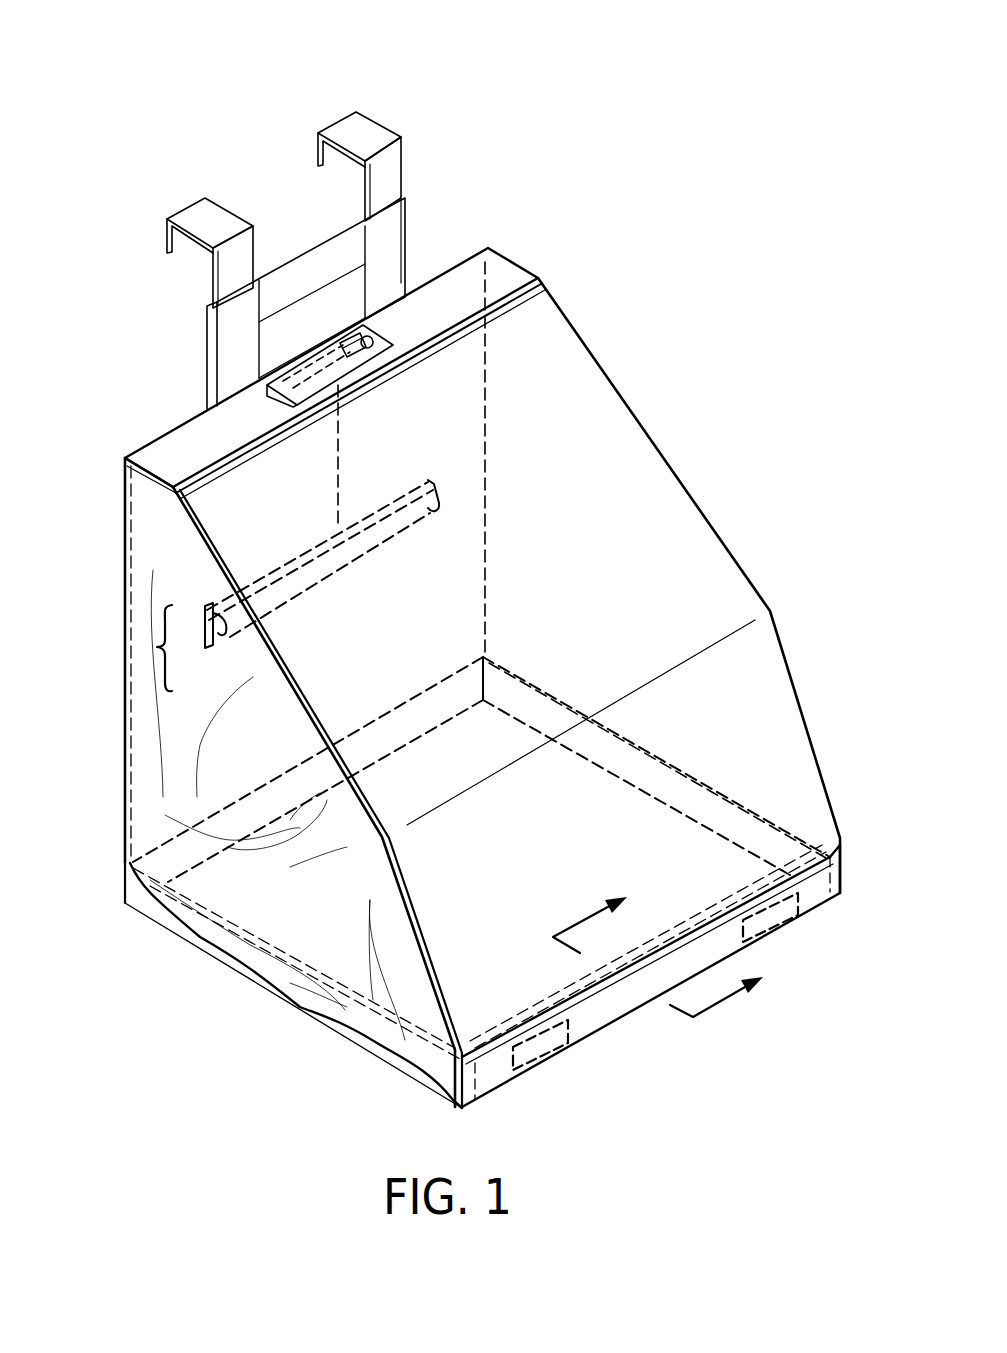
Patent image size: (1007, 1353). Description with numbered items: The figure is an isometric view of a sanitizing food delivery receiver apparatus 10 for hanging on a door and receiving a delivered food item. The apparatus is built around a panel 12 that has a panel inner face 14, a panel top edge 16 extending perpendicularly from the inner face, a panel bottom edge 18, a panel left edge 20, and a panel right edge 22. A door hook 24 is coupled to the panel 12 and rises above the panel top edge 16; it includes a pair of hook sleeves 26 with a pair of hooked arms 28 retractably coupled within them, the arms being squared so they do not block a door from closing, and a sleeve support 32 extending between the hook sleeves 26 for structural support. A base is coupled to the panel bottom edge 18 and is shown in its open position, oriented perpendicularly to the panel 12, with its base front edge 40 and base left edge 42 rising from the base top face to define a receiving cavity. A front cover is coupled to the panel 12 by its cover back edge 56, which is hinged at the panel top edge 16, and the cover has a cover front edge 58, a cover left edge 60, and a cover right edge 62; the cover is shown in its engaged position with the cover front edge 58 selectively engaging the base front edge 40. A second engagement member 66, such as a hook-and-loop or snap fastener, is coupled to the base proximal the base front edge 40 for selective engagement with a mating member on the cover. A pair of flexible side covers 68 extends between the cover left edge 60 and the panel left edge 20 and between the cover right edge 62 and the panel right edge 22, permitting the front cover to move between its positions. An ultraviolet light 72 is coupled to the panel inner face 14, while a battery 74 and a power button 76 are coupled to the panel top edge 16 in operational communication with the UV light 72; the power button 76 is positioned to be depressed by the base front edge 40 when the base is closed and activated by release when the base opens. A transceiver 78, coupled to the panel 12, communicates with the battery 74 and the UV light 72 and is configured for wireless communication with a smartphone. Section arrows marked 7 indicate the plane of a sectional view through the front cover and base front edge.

The sanitizing food delivery receiver apparatus 10 is at (722, 164).
The panel 12 is at (125, 768).
The panel inner face 14 is at (156, 647).
The panel top edge 16 is at (285, 412).
The panel bottom edge 18 is at (400, 700).
The panel left edge 20 is at (125, 828).
The panel right edge 22 is at (494, 496).
The door hook 24 is at (371, 280).
The hook sleeves 26 is at (307, 207).
The hooked arms 28 is at (353, 127).
The sleeve support 32 is at (313, 267).
The base front edge 40 is at (670, 1001).
The base left edge 42 is at (240, 967).
The cover back edge 56 is at (238, 452).
The cover front edge 58 is at (843, 890).
The cover left edge 60 is at (420, 953).
The cover right edge 62 is at (812, 738).
The second engagement member 66 is at (757, 925).
The side covers 68 is at (260, 877).
The ultraviolet (UV) light 72 is at (440, 487).
The battery 74 is at (485, 294).
The power button 76 is at (368, 336).
The transceiver 78 is at (366, 352).
The section line 7 is at (679, 943).